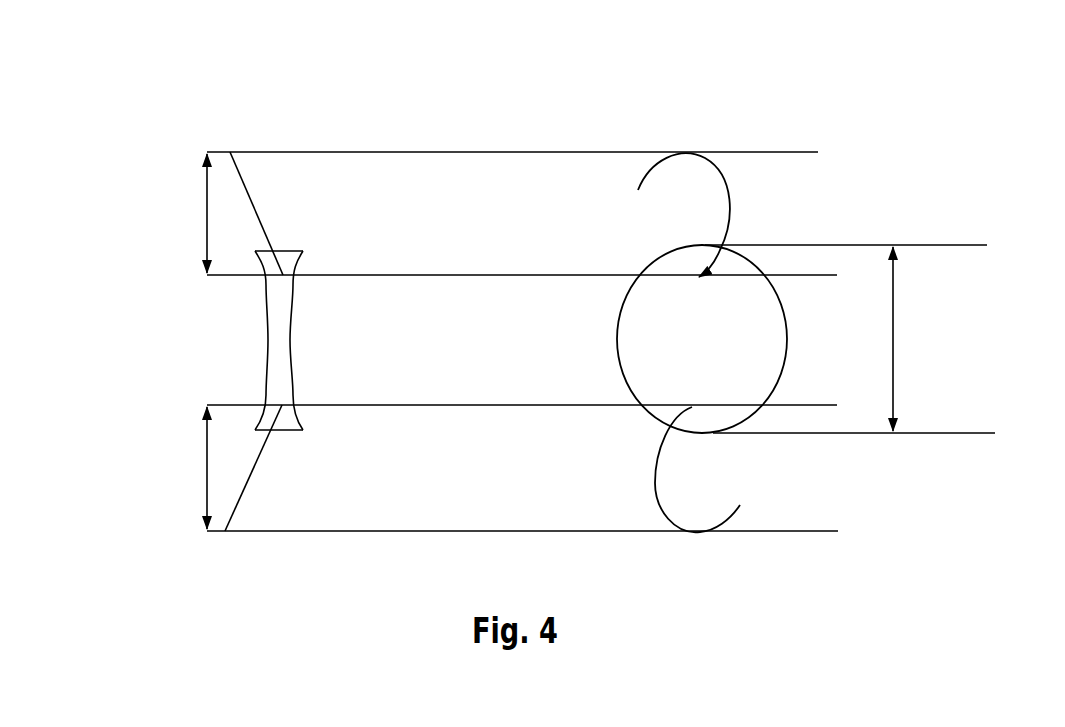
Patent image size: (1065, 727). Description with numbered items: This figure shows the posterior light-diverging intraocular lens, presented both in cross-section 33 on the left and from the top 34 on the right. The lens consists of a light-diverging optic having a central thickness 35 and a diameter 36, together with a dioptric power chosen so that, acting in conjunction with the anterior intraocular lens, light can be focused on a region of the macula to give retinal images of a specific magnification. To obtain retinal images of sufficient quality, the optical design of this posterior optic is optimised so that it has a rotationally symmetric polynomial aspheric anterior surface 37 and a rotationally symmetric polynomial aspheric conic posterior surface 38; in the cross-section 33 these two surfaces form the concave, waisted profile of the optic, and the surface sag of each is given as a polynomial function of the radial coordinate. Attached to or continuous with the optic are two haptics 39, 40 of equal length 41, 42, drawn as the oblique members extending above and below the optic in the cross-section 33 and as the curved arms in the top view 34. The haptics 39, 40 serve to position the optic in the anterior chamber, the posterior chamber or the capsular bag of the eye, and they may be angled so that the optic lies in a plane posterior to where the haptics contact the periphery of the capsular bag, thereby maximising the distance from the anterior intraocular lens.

The cross-section 33 is at (522, 268).
The top view 34 is at (702, 268).
The central thickness 35 is at (273, 341).
The diameter 36 is at (897, 337).
The aspheric anterior surface 37 is at (262, 288).
The aspheric conic posterior surface 38 is at (296, 313).
The haptic 39 is at (260, 216).
The haptic 40 is at (253, 483).
The haptic length 41 is at (205, 198).
The haptic length 42 is at (205, 481).